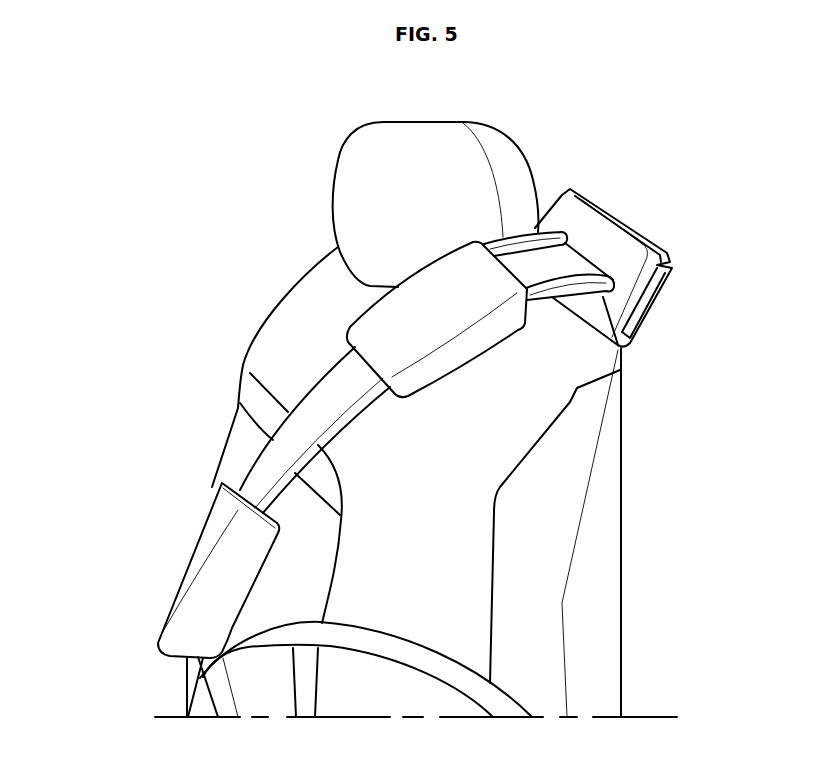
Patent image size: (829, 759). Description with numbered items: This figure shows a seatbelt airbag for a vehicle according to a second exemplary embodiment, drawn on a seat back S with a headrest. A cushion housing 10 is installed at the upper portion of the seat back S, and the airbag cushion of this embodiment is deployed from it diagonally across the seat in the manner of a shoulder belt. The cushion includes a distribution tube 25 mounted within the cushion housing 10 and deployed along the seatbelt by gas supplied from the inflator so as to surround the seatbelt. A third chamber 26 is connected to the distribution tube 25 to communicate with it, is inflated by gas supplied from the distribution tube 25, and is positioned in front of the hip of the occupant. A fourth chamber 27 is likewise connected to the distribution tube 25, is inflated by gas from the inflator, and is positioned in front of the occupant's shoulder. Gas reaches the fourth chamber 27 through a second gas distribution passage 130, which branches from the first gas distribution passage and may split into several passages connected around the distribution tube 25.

The cushion housing 10 is at (620, 253).
The distribution tube 25 is at (280, 453).
The third chamber 26 is at (218, 572).
The fourth chamber 27 is at (412, 312).
The second gas distribution passage 130 is at (600, 288).
The seat back S is at (548, 532).